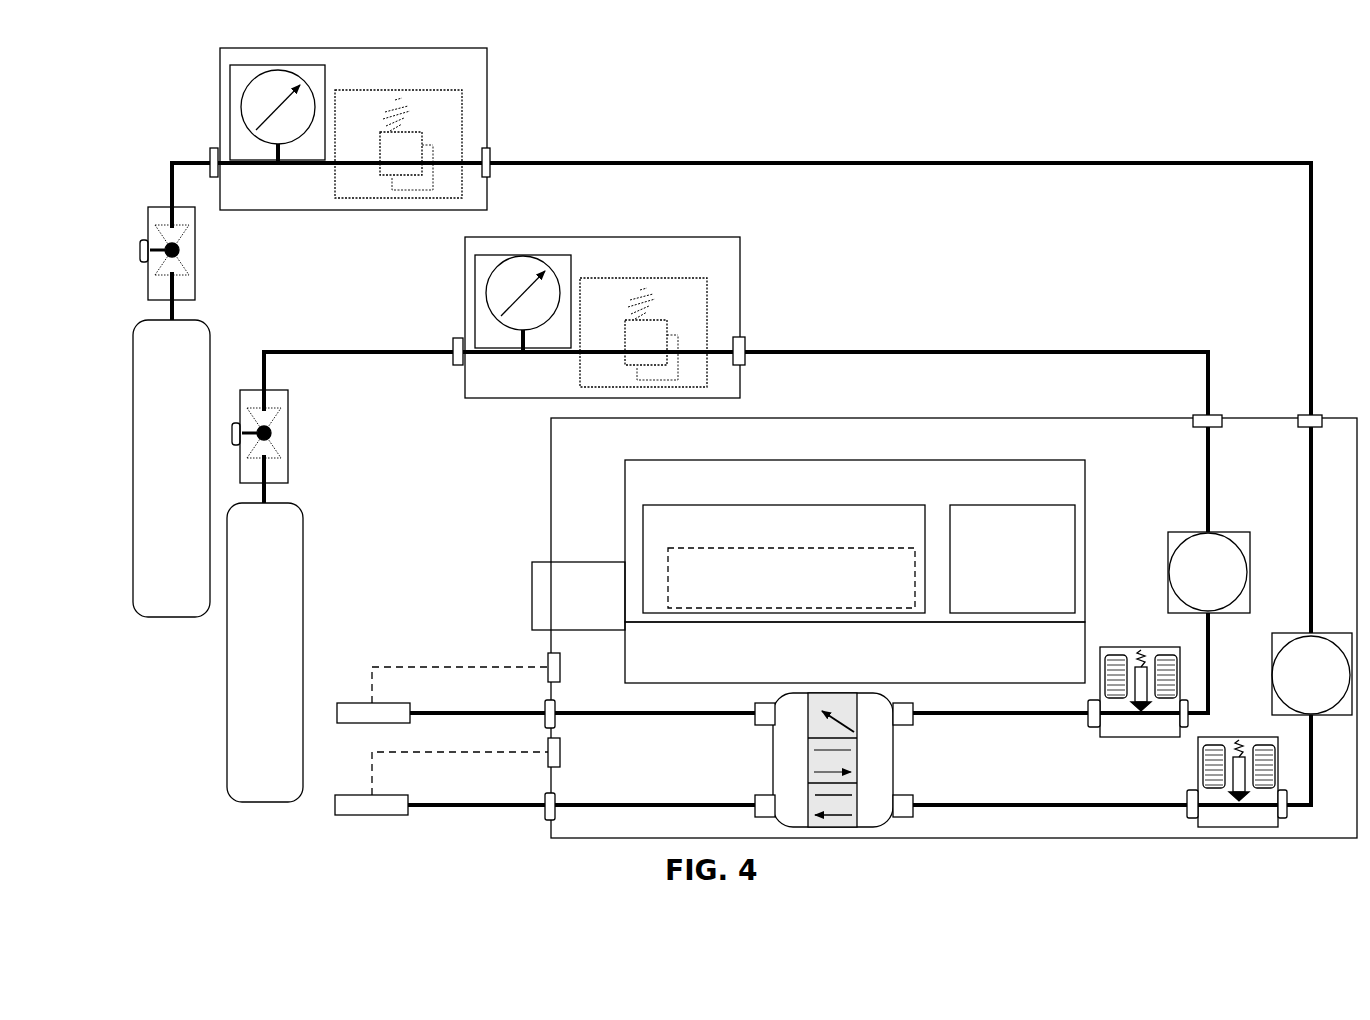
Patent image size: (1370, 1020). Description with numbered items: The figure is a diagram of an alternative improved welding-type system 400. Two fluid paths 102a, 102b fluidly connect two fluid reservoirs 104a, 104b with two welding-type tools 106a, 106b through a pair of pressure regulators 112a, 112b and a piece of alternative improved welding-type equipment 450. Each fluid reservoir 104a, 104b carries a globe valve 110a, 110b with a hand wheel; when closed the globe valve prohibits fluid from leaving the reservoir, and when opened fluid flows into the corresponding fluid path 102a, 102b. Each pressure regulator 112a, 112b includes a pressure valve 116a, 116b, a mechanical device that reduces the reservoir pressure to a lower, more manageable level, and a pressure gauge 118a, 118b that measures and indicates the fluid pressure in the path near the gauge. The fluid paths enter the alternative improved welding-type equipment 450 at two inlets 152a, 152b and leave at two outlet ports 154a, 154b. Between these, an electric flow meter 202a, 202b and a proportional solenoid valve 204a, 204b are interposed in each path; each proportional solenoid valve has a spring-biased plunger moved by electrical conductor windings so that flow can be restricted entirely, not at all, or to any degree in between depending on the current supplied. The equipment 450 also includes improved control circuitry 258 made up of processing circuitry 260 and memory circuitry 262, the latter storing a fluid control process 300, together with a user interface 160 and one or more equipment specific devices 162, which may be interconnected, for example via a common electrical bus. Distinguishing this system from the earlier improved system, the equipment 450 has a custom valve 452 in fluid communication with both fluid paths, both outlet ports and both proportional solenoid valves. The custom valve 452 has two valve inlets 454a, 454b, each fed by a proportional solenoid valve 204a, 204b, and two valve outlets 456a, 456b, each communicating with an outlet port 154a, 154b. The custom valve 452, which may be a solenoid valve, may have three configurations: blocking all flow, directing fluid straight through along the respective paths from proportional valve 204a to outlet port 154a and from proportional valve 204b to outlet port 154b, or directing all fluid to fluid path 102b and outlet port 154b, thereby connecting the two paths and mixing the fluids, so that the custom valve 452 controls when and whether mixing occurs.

The alternative improved welding-type system 400 is at (1310, 112).
The fluid path 102a is at (162, 183).
The fluid path 102b is at (277, 342).
The fluid reservoir 104a is at (130, 470).
The fluid reservoir 104b is at (227, 650).
The welding-type tool 106a is at (370, 818).
The welding-type tool 106b is at (373, 727).
The globe valve 110a is at (208, 252).
The globe valve 110b is at (292, 435).
The pressure regulator 112a is at (301, 126).
The pressure regulator 112b is at (551, 290).
The pressure valve 116a is at (397, 87).
The pressure valve 116b is at (643, 273).
The pressure gauge 118a is at (228, 113).
The pressure gauge 118b is at (522, 252).
The inlet 152a is at (1307, 405).
The inlet 152b is at (1193, 405).
The outlet port 154a is at (557, 793).
The outlet port 154b is at (562, 705).
The user interface 160 is at (578, 596).
The equipment specific device 162 is at (855, 652).
The electric flow meter 202a is at (1267, 673).
The electric flow meter 202b is at (1165, 572).
The proportional solenoid valve 204a is at (1237, 735).
The proportional solenoid valve 204b is at (1142, 645).
The improved control circuitry 258 is at (855, 541).
The processing circuitry 260 is at (1012, 559).
The memory circuitry 262 is at (784, 559).
The fluid control process 300 is at (791, 578).
The alternative improved welding-type equipment 450 is at (954, 628).
The custom valve 452 is at (864, 760).
The valve inlet 454a is at (897, 788).
The valve inlet 454b is at (897, 727).
The valve outlet 456a is at (775, 788).
The valve outlet 456b is at (775, 727).